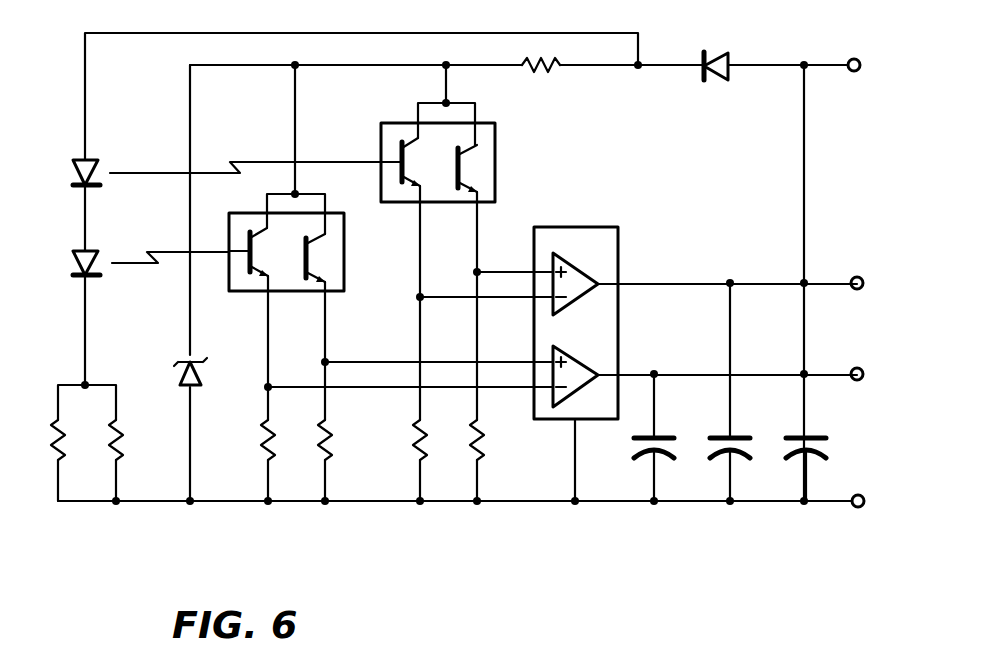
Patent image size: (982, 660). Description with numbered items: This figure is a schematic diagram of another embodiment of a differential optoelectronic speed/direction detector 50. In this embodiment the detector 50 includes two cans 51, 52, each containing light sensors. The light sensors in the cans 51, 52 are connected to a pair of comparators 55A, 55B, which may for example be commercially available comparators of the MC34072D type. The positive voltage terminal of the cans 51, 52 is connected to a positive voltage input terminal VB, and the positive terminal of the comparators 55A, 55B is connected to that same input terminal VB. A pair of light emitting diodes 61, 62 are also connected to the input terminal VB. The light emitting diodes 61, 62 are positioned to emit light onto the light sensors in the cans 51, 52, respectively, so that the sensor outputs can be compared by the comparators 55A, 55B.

The differential optoelectronic speed/direction detector 50 is at (453, 552).
The can 51 is at (495, 156).
The can 52 is at (344, 273).
The comparator 55A is at (582, 260).
The comparator 55B is at (582, 351).
The light emitting diode 61 is at (93, 158).
The light emitting diode 62 is at (93, 279).